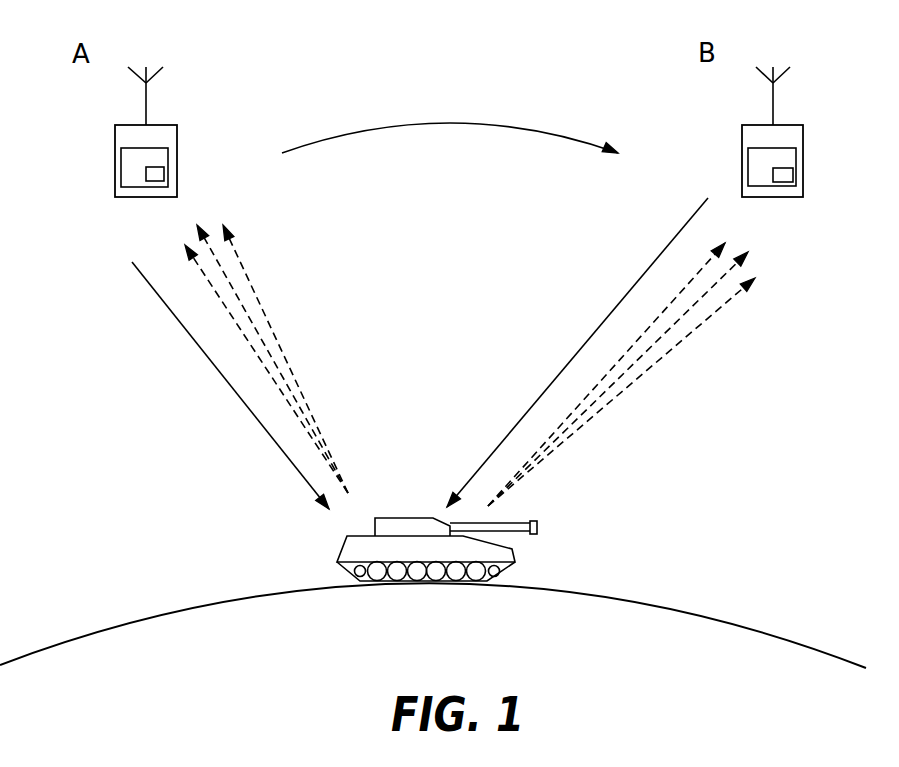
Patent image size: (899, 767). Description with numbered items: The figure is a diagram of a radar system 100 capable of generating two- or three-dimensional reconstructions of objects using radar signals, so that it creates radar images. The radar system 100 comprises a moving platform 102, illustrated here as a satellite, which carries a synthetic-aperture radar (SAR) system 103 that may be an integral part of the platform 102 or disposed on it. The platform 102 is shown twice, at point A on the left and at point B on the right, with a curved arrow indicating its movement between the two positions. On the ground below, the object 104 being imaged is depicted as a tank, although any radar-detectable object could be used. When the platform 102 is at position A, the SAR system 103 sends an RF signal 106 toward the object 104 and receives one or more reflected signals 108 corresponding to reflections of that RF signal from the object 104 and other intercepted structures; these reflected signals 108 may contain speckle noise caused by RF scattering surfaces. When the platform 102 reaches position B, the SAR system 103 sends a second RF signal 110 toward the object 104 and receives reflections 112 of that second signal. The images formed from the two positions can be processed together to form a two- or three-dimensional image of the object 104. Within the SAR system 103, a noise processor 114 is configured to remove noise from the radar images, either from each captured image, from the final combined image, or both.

The radar system 100 is at (454, 113).
The platform 102 is at (115, 133).
The synthetic-aperture radar (SAR) system 103 is at (172, 162).
The noise processor 114 is at (158, 175).
The object 104 is at (338, 552).
The RF signal 106 is at (217, 370).
The reflected signals 108 is at (278, 343).
The second RF signal 110 is at (603, 323).
The reflections of the second RF signal 112 is at (640, 378).